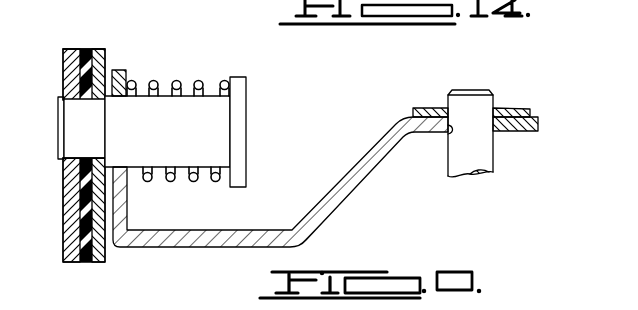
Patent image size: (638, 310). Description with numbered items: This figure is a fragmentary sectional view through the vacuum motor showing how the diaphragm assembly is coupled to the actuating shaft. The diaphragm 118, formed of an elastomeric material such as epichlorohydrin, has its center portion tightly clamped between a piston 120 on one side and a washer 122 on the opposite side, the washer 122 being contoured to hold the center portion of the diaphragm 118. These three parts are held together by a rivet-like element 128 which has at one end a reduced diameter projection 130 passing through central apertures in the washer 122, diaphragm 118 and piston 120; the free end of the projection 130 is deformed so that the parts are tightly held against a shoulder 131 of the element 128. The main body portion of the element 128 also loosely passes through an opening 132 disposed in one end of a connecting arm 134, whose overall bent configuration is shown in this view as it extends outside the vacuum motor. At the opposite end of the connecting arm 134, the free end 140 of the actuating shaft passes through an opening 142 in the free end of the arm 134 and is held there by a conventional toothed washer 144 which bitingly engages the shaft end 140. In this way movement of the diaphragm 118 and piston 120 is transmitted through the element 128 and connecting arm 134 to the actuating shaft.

The diaphragm 118 is at (85, 48).
The piston 120 is at (64, 58).
The washer 122 is at (105, 50).
The rivet-like element 128 is at (230, 119).
The reduced diameter projection 130 is at (68, 120).
The shoulder 131 is at (97, 161).
The opening 132 is at (120, 166).
The connecting arm 134 is at (243, 237).
The shaft free end 140 is at (467, 95).
The opening 142 is at (450, 134).
The toothed washer 144 is at (425, 111).